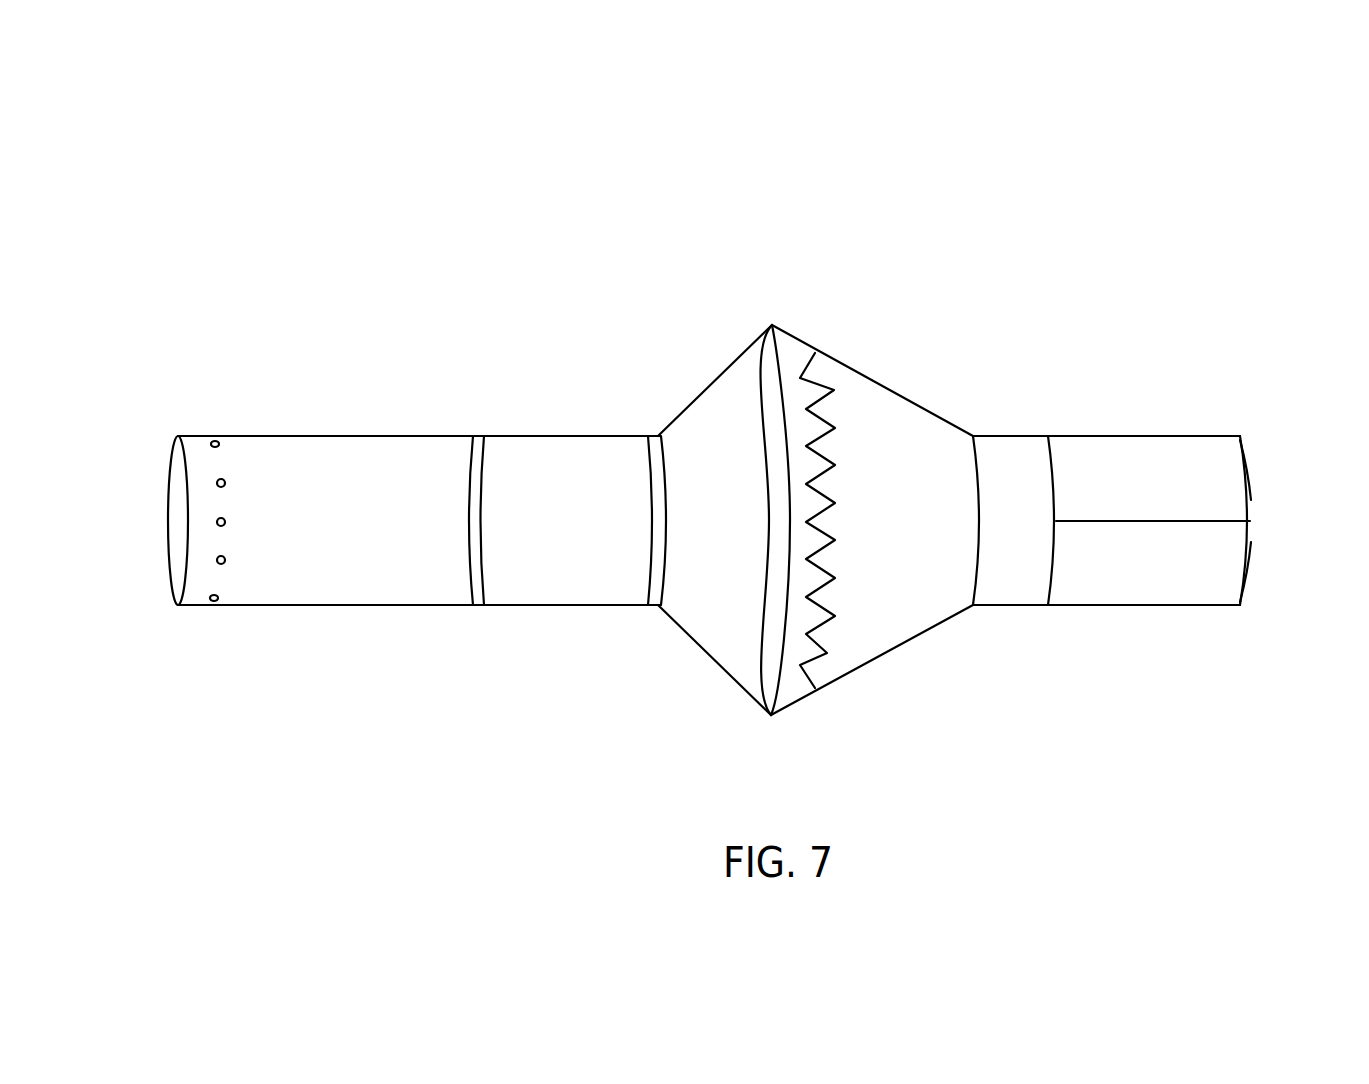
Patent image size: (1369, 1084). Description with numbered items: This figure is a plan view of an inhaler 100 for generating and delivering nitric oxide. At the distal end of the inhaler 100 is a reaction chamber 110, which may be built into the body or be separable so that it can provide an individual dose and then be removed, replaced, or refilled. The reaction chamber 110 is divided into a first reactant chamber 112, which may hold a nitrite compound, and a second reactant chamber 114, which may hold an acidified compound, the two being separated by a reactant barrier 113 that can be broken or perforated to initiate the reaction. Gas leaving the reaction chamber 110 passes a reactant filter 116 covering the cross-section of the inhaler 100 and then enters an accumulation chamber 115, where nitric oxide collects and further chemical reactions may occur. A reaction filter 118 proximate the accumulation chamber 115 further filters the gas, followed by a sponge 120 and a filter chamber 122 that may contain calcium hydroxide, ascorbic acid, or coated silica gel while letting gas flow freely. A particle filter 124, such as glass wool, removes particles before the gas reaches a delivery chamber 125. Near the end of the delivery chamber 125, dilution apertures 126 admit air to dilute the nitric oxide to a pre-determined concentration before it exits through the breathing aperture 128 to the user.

The inhaler 100 is at (866, 139).
The reaction chamber 110 is at (1130, 436).
The first reactant chamber 112 is at (1242, 458).
The reactant barrier 113 is at (1250, 521).
The second reactant chamber 114 is at (1242, 577).
The accumulation chamber 115 is at (875, 637).
The reactant filter 116 is at (1008, 452).
The reaction filter 118 is at (818, 380).
The sponge 120 is at (767, 343).
The filter chamber 122 is at (560, 458).
The particle filter 124 is at (470, 440).
The delivery chamber 125 is at (360, 593).
The dilution apertures 126 is at (216, 437).
The breathing aperture 128 is at (178, 482).